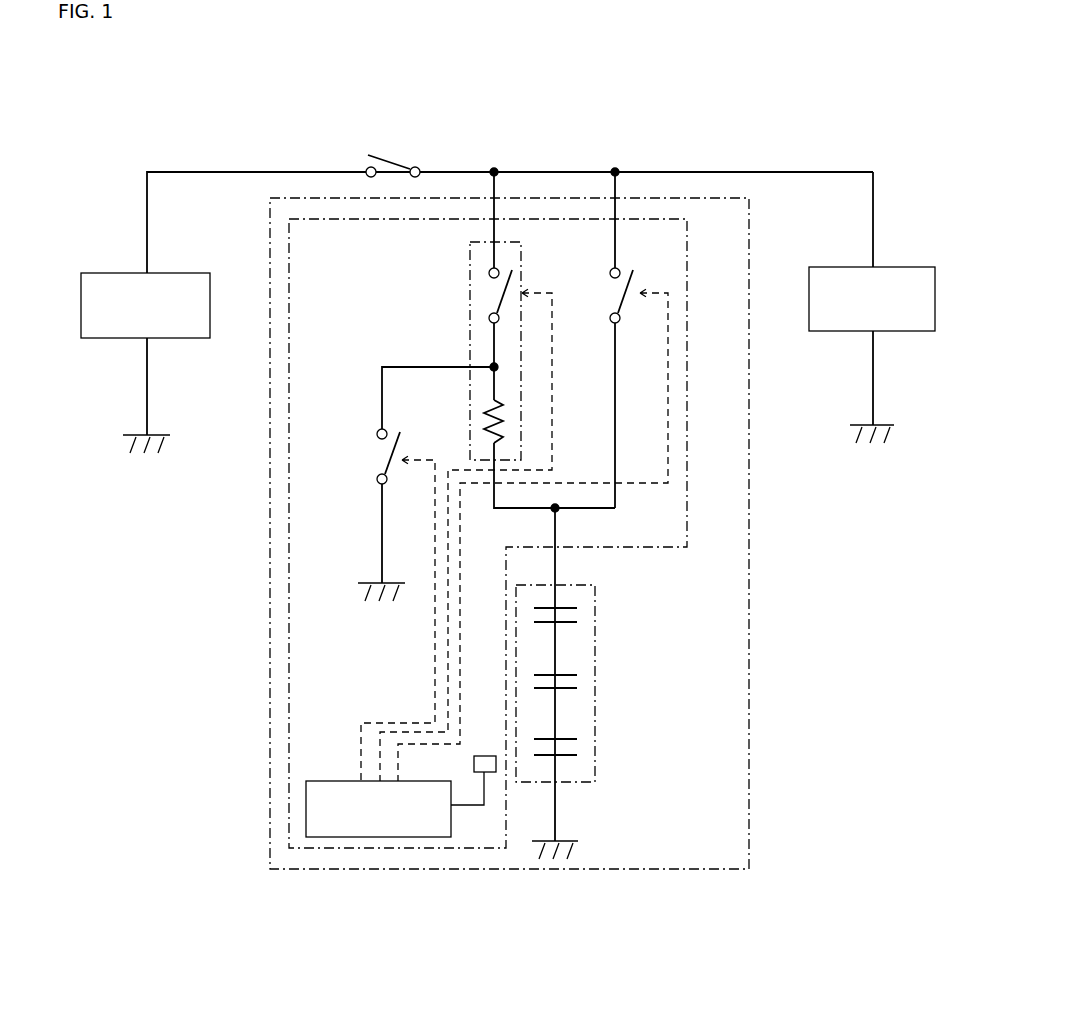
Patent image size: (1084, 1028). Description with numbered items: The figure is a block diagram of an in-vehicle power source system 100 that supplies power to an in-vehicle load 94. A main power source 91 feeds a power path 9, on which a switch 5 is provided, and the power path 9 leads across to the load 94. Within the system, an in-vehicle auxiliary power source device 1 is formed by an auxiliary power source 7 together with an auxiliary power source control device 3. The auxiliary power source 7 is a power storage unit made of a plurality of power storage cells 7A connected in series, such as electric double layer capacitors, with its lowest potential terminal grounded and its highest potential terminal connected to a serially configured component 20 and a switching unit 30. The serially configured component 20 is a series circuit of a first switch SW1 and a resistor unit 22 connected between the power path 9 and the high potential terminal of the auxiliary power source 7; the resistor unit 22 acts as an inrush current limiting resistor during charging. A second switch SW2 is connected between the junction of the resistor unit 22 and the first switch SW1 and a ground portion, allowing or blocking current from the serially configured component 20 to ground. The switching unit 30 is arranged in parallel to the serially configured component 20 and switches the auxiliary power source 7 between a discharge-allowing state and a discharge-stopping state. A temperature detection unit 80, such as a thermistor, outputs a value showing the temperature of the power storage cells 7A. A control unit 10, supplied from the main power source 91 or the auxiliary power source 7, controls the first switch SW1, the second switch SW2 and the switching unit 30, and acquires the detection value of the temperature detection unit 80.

The in-vehicle power source system 100 is at (833, 105).
The power path 9 is at (294, 172).
The switch 5 is at (390, 162).
The in-vehicle auxiliary power source device 1 is at (749, 240).
The auxiliary power source control device 3 is at (687, 468).
The serially configured component 20 is at (470, 291).
The first switch SW1 is at (512, 280).
The resistor unit 22 is at (504, 433).
The switching unit 30 is at (632, 283).
The second switch SW2 is at (398, 442).
The auxiliary power source 7 is at (595, 712).
The power storage cells 7A is at (578, 622).
The temperature detection unit 80 is at (489, 772).
The control unit 10 is at (420, 838).
The main power source 91 is at (112, 340).
The in-vehicle load 94 is at (904, 331).